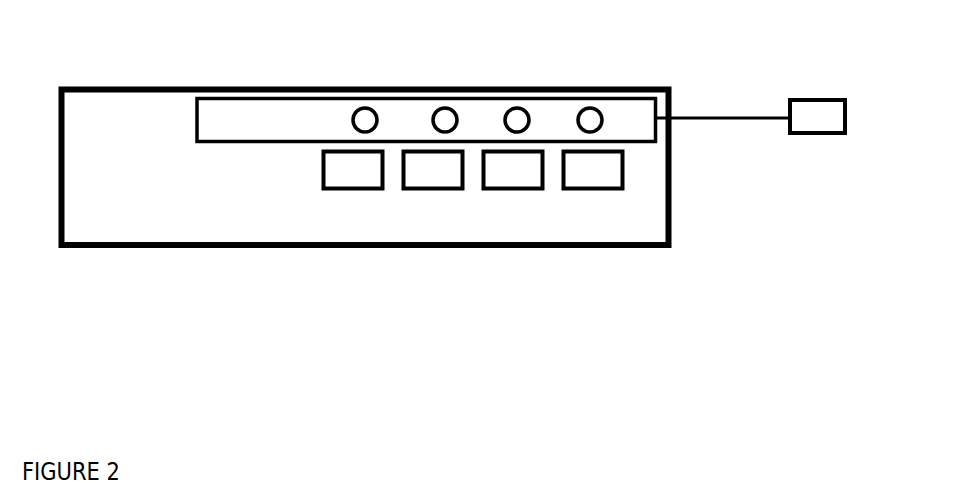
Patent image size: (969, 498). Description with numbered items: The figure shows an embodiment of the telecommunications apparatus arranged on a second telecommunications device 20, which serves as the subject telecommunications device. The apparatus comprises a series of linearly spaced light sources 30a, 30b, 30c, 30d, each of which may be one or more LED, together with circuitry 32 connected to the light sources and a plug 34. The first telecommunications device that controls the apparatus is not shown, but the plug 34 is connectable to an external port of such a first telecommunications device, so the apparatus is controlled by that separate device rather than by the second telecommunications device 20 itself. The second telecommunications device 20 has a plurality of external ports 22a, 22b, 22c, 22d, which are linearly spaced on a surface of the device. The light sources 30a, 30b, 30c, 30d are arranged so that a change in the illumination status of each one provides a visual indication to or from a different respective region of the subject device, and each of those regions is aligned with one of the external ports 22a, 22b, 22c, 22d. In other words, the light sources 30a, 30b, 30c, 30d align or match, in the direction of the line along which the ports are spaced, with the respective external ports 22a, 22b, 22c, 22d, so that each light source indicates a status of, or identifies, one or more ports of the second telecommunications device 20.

The second telecommunications device 20 is at (365, 168).
The external port 22a is at (353, 170).
The external port 22b is at (433, 170).
The external port 22c is at (513, 170).
The external port 22d is at (593, 170).
The light source 30a is at (353, 118).
The light source 30b is at (433, 118).
The light source 30c is at (505, 118).
The light source 30d is at (578, 118).
The circuitry 32 is at (618, 97).
The plug 34 is at (751, 117).